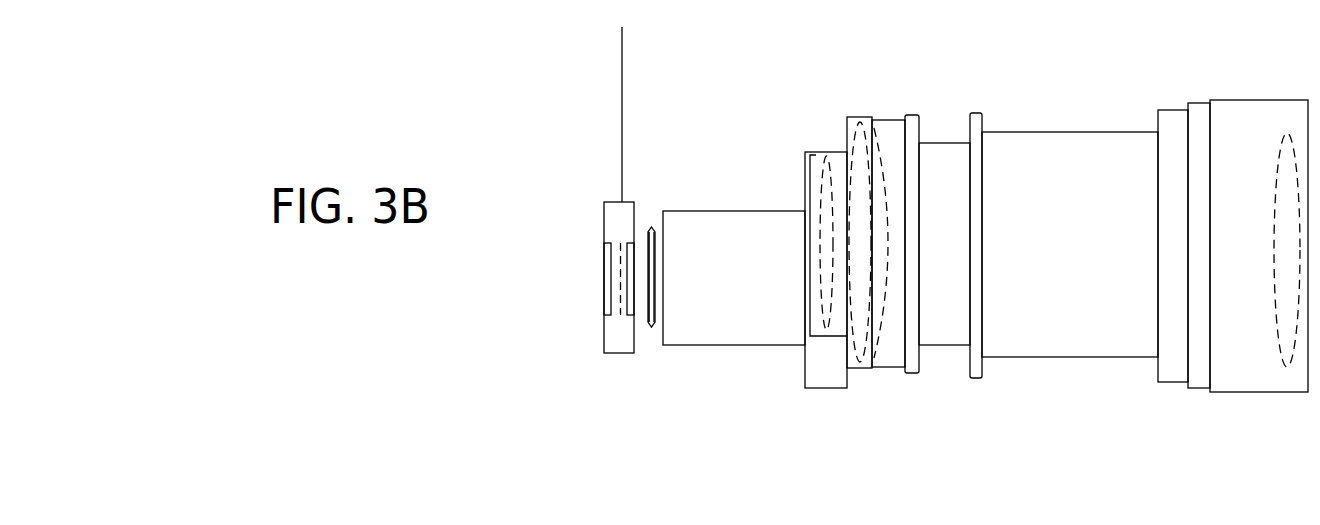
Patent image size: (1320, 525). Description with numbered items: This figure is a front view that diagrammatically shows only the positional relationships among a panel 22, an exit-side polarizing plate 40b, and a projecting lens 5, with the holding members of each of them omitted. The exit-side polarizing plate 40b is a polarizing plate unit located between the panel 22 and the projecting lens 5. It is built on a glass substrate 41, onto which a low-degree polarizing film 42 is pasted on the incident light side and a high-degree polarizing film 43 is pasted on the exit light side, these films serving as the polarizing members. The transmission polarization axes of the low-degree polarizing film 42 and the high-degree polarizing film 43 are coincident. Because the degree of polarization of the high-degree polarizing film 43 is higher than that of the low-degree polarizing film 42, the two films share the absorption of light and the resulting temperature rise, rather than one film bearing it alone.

The panel 22 is at (622, 223).
The exit-side polarizing plate 40b is at (654, 214).
The glass substrate 41 is at (628, 335).
The low-degree polarizing film 42 is at (655, 315).
The high-degree polarizing film 43 is at (655, 308).
The projecting lens 5 is at (1080, 333).